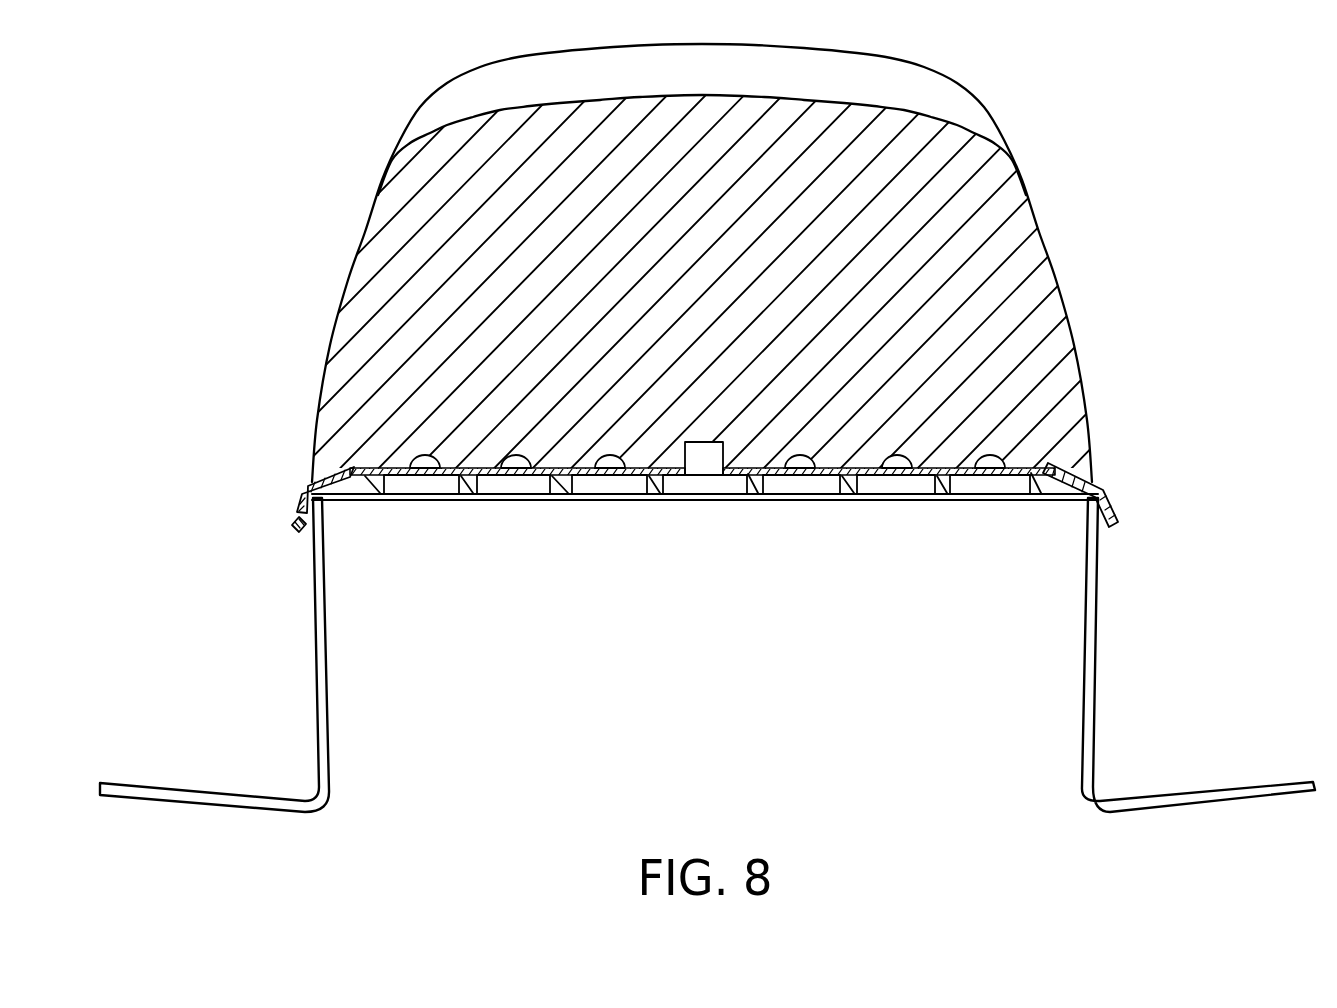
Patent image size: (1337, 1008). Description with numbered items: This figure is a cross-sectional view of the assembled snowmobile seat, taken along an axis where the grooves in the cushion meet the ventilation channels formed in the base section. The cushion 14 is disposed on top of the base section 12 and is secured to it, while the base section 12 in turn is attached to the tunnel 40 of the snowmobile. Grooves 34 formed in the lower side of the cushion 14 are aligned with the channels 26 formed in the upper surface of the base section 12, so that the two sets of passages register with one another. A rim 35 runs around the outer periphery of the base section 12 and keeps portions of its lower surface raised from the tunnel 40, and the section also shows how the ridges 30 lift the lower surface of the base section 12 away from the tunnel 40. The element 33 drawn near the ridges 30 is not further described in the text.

The base section 12 is at (1114, 479).
The cushion 14 is at (1024, 253).
The channels 26 is at (997, 486).
The ridges 30 is at (847, 484).
The conductive pads 33 is at (893, 485).
The grooves 34 is at (1002, 443).
The rim 35 is at (339, 465).
The tunnel 40 is at (1098, 609).